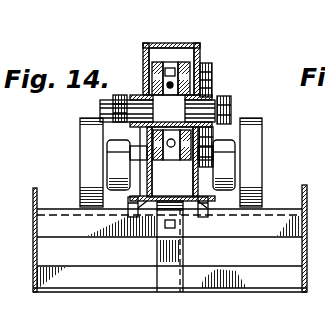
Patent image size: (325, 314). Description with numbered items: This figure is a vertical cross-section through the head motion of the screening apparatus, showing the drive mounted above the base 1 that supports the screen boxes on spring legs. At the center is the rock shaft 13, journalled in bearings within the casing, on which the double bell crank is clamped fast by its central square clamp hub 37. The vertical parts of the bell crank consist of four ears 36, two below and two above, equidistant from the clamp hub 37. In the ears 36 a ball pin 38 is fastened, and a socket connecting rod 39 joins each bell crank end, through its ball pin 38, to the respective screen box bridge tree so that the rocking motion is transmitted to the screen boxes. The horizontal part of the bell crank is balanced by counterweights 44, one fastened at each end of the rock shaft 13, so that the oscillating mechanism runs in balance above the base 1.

The base 1 is at (307, 250).
The rock shaft 13 is at (214, 88).
The ears 36 is at (200, 47).
The central square clamp hub 37 is at (177, 63).
The ball pin 38 is at (196, 62).
The socket connecting rod 39 is at (172, 152).
The counterweights 44 is at (114, 98).